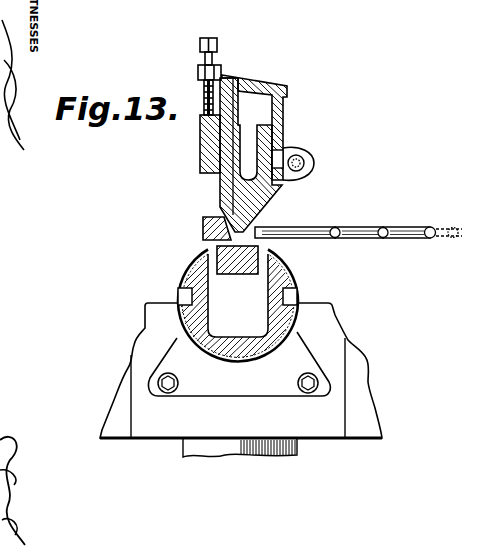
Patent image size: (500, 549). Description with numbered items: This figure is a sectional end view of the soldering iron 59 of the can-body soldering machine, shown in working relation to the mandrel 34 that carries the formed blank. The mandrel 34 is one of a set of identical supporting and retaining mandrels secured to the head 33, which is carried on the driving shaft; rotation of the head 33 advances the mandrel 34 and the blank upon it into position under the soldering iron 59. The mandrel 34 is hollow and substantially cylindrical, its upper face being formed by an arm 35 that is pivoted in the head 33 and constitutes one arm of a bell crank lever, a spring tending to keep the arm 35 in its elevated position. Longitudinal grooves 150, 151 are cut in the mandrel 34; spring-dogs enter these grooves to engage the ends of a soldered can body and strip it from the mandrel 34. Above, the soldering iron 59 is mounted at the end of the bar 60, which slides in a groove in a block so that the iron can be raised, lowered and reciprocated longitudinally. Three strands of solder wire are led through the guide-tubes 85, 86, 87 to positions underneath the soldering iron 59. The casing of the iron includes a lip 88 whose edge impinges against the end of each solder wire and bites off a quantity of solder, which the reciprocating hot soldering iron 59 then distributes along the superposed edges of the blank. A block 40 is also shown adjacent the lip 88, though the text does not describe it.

The head 33 is at (342, 376).
The mandrel 34 is at (296, 275).
The arm 35 is at (246, 278).
The stripper block 40 is at (203, 226).
The soldering iron 59 is at (281, 130).
The bar 60 is at (201, 157).
The guide-tube 85 is at (412, 229).
The guide-tube 86 is at (360, 230).
The guide-tube 87 is at (303, 232).
The lip 88 is at (243, 228).
The longitudinal groove 150 is at (182, 292).
The longitudinal groove 151 is at (298, 298).